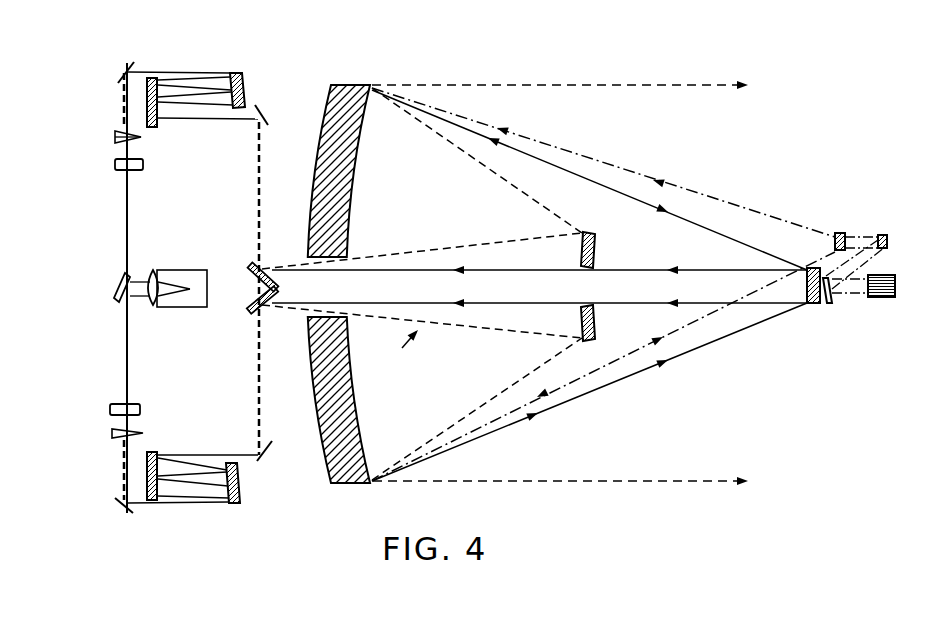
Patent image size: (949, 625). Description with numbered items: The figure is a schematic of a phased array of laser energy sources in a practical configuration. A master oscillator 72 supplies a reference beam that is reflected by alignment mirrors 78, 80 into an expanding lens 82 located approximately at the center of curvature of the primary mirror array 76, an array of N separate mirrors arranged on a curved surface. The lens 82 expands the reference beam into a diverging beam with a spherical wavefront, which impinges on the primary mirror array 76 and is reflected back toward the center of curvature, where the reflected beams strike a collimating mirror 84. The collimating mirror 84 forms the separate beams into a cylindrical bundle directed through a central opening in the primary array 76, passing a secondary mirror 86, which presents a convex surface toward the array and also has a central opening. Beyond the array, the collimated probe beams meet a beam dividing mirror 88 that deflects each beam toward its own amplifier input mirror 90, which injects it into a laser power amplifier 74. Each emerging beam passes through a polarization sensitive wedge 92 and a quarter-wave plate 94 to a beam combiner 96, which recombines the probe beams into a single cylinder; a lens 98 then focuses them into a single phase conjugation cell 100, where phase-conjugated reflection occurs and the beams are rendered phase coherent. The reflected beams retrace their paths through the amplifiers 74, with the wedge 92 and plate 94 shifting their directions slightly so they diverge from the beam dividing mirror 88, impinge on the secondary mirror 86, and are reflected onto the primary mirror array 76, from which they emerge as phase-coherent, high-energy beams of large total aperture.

The master oscillator 72 is at (878, 298).
The laser power amplifiers 74 is at (212, 71).
The primary mirror array 76 is at (348, 83).
The alignment mirror 78 is at (828, 307).
The alignment mirror 80 is at (888, 241).
The expanding lens 82 is at (841, 232).
The collimating mirror 84 is at (815, 309).
The secondary mirror 86 is at (596, 247).
The beam dividing mirror 88 is at (250, 309).
The amplifier input mirror 90 is at (270, 104).
The polarization sensitive wedge 92 is at (112, 133).
The quarter-wave plate 94 is at (112, 160).
The beam combiner 96 is at (113, 285).
The lens 98 is at (152, 304).
The phase conjugation cell 100 is at (194, 269).